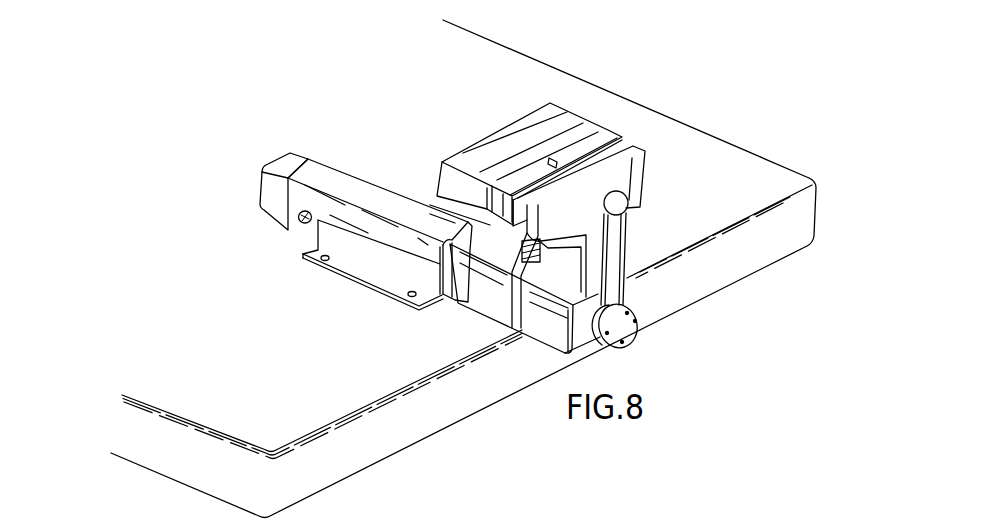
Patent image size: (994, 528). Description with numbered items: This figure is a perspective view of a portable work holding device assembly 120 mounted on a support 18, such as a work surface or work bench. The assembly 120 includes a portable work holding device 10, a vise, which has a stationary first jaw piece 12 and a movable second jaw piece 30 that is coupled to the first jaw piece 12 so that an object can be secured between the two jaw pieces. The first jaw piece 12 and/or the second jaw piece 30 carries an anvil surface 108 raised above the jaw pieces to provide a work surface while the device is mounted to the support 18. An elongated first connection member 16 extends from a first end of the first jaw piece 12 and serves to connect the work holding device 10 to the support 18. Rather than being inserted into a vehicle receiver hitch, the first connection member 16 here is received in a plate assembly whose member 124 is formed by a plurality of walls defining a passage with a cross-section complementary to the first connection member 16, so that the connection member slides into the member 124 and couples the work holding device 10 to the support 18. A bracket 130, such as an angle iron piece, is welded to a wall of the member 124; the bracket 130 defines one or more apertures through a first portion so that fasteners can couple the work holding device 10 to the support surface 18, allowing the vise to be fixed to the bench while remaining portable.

The portable work holding device 10 is at (566, 189).
The stationary first jaw piece 12 is at (526, 149).
The first connection member 16 is at (273, 207).
The support 18 is at (725, 152).
The movable second jaw piece 30 is at (645, 160).
The anvil surface 108 is at (556, 131).
The portable work holding device assembly 120 is at (348, 203).
The member 124 is at (345, 181).
The bracket 130 is at (373, 274).